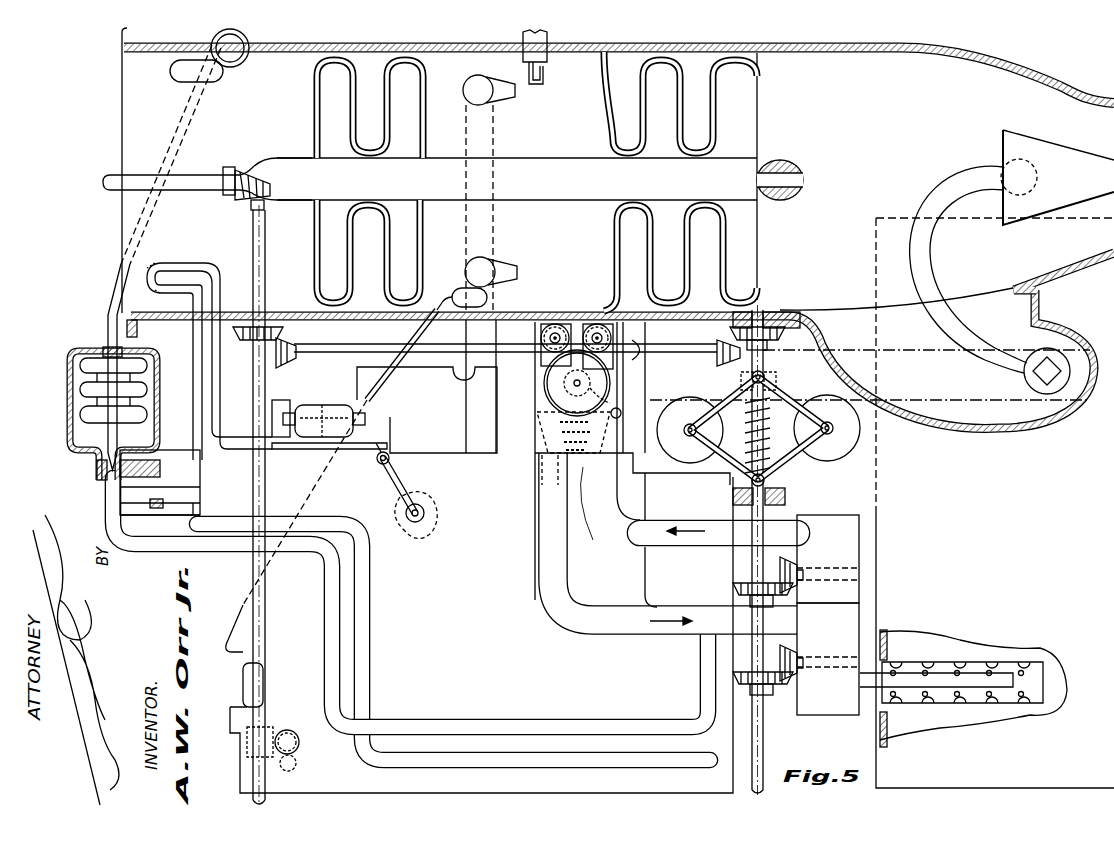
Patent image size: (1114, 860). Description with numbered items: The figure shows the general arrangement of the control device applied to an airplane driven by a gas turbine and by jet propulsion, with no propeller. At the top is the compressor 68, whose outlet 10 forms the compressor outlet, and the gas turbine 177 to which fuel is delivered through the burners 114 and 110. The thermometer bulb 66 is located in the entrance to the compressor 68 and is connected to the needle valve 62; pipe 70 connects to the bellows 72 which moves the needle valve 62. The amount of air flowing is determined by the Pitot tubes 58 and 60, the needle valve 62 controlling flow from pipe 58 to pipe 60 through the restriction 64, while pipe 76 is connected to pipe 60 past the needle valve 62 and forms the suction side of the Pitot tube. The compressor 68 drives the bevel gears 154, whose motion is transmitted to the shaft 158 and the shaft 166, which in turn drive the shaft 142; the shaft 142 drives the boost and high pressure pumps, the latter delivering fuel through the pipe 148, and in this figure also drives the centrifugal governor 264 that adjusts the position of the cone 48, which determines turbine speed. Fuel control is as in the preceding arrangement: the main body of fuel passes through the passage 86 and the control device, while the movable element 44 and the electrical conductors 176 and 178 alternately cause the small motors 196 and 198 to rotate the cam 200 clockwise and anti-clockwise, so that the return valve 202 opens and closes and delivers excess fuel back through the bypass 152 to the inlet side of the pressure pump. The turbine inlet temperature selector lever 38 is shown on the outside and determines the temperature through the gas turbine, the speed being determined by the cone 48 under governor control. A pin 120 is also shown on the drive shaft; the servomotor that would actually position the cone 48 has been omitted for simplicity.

The compressor outlet 10 is at (452, 244).
The turbine inlet temperature selector lever 38 is at (397, 481).
The movable element 44 is at (322, 408).
The cone 48 is at (1086, 191).
The Pitot tube 58 is at (188, 270).
The Pitot tube 60 is at (217, 271).
The needle valve 62 is at (70, 440).
The restriction 64 is at (152, 507).
The thermometer bulb 66 is at (170, 72).
The compressor 68 is at (318, 112).
The pipe 70 is at (246, 41).
The bellows 72 is at (70, 386).
The pipe 76 is at (505, 722).
The fuel passage 86 is at (590, 547).
The small restriction 110 is at (467, 274).
The burner 114 is at (468, 78).
The pin 120 is at (297, 764).
The shaft 142 is at (763, 726).
The pipe 148 is at (680, 543).
The bypass passage 152 is at (590, 633).
The bevel gears 154 is at (233, 168).
The shaft 158 is at (355, 341).
The shaft 166 is at (266, 594).
The electrical conductor 176 is at (392, 418).
The gas turbine 177 is at (680, 231).
The electrical conductor 178 is at (357, 372).
The small electric motor 196 is at (598, 325).
The small electric motor 198 is at (562, 326).
The cam 200 is at (598, 397).
The return valve 202 is at (548, 447).
The roller 264 is at (832, 458).